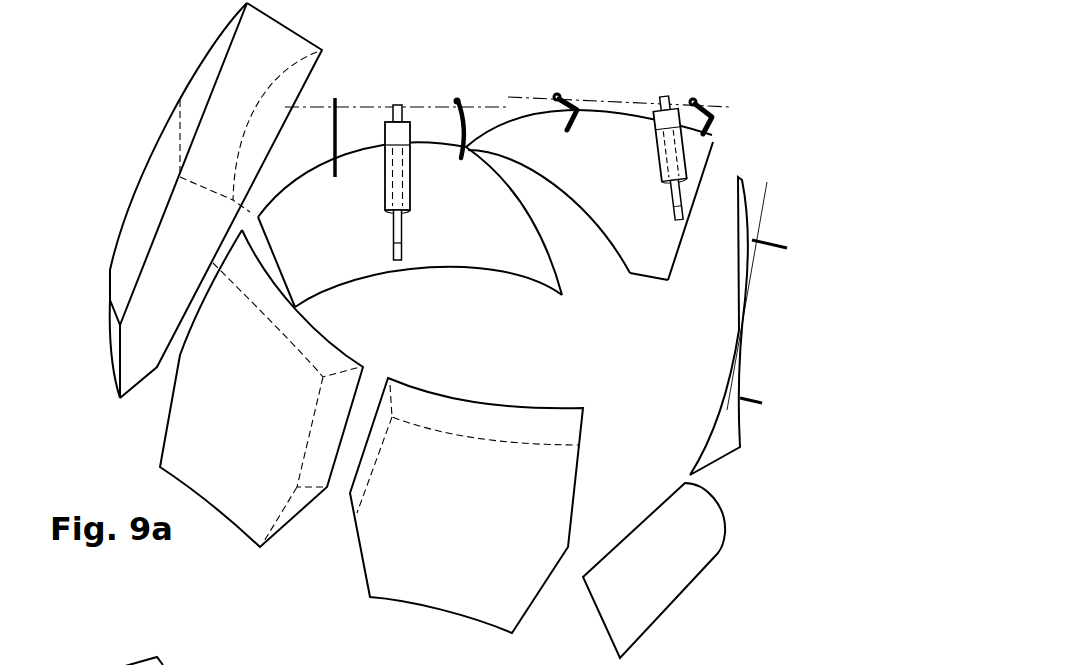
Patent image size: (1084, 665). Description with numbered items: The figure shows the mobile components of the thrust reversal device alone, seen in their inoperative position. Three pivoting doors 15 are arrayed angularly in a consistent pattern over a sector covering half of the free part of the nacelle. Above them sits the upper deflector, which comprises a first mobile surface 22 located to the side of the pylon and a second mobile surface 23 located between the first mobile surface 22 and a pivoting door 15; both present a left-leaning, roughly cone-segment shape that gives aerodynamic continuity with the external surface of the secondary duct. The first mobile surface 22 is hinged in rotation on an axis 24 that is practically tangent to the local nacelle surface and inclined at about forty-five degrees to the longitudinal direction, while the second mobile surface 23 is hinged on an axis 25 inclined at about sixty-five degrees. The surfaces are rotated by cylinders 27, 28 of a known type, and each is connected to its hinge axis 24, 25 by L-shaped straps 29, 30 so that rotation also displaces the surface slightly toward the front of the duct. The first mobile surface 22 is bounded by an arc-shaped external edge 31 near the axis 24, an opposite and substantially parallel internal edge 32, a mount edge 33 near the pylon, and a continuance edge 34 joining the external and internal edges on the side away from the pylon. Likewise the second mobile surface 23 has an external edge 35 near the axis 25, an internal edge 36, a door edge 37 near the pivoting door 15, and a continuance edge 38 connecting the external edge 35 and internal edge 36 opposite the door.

The pivoting door 15 is at (154, 50).
The first mobile surface 22 is at (667, 54).
The second mobile surface 23 is at (447, 56).
The hinge axis 24 is at (720, 107).
The hinge axis 25 is at (347, 108).
The cylinder 27 is at (673, 152).
The cylinder 28 is at (424, 134).
The L-shaped strap 29 is at (575, 97).
The L-shaped strap 30 is at (467, 113).
The external edge 31 is at (612, 108).
The internal edge 32 is at (596, 227).
The mount edge 33 is at (707, 190).
The continuance edge 34 is at (593, 228).
The external edge 35 is at (361, 157).
The internal edge 36 is at (410, 196).
The door edge 37 is at (283, 278).
The continuance edge 38 is at (527, 213).